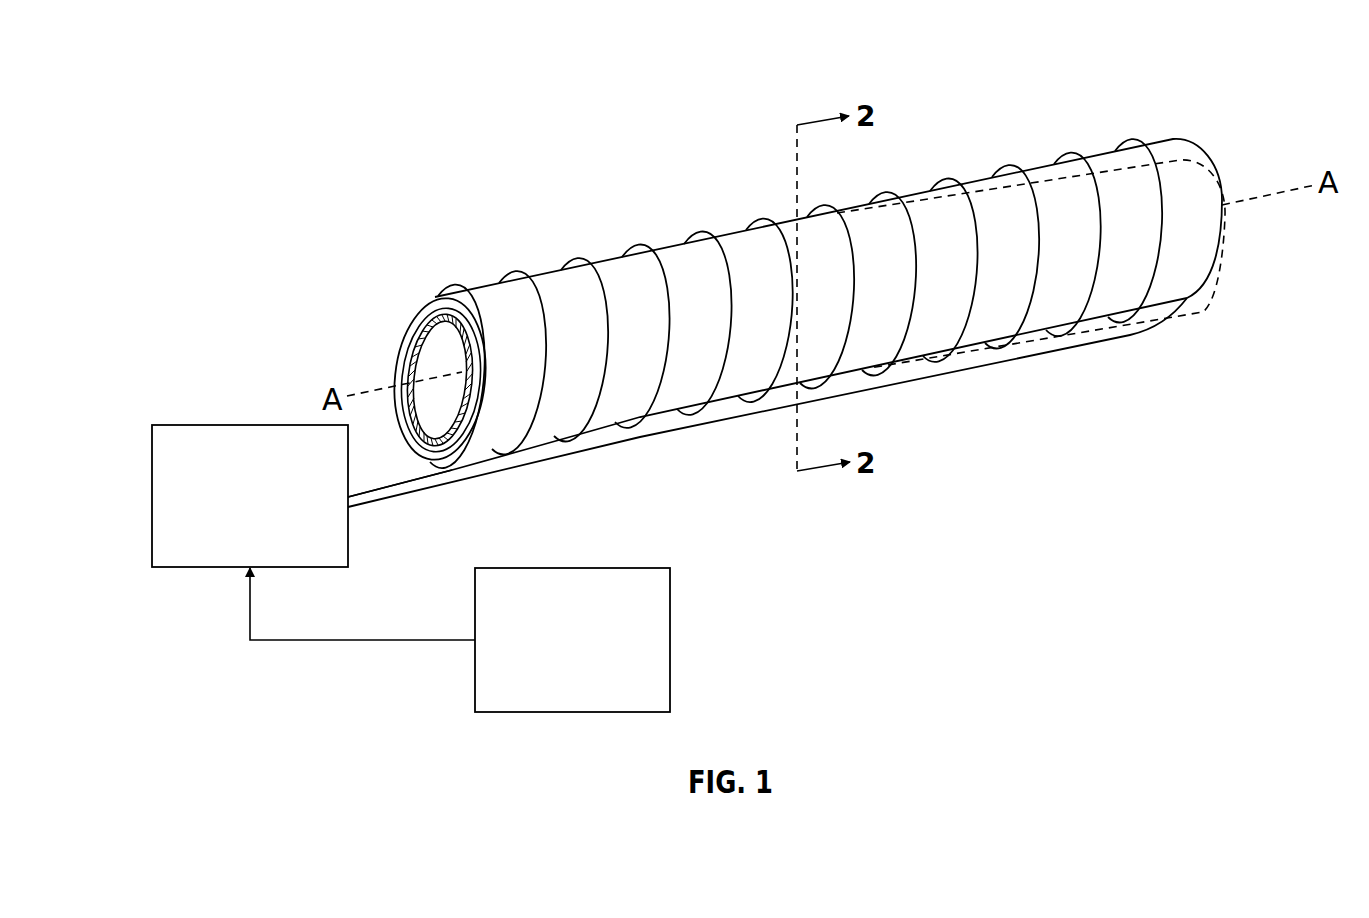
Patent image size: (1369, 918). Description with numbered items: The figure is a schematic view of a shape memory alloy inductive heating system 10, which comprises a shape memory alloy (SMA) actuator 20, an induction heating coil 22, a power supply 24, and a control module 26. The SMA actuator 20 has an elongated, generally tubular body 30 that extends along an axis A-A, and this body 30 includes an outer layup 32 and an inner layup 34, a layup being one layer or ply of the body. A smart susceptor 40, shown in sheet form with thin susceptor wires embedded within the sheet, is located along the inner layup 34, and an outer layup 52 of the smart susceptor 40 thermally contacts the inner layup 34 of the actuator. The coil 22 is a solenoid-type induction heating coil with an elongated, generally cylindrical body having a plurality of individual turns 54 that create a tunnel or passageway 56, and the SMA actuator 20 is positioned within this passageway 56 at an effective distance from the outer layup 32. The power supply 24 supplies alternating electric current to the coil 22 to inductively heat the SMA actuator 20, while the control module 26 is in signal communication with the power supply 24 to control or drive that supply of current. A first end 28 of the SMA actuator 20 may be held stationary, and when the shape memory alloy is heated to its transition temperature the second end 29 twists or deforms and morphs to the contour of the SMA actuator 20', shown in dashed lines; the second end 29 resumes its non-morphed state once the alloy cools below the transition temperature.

The shape memory alloy inductive heating system 10 is at (300, 97).
The shape memory alloy actuator 20 is at (814, 318).
The SMA actuator in morphed contour 20' is at (1066, 264).
The induction heating coil 22 is at (952, 180).
The power supply 24 is at (180, 423).
The control module 26 is at (640, 568).
The first end 28 is at (442, 302).
The second end 29 is at (1173, 142).
The tubular body 30 is at (712, 331).
The outer layup 32 is at (1040, 174).
The inner layup 34 is at (420, 410).
The smart susceptor 40 is at (428, 320).
The outer layup of the smart susceptor 52 is at (403, 363).
The turns 54 is at (943, 367).
The passageway 56 is at (575, 439).